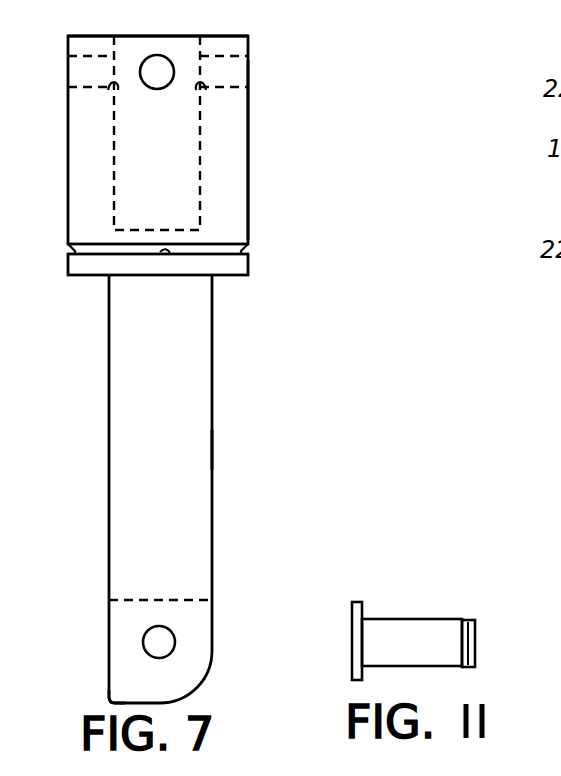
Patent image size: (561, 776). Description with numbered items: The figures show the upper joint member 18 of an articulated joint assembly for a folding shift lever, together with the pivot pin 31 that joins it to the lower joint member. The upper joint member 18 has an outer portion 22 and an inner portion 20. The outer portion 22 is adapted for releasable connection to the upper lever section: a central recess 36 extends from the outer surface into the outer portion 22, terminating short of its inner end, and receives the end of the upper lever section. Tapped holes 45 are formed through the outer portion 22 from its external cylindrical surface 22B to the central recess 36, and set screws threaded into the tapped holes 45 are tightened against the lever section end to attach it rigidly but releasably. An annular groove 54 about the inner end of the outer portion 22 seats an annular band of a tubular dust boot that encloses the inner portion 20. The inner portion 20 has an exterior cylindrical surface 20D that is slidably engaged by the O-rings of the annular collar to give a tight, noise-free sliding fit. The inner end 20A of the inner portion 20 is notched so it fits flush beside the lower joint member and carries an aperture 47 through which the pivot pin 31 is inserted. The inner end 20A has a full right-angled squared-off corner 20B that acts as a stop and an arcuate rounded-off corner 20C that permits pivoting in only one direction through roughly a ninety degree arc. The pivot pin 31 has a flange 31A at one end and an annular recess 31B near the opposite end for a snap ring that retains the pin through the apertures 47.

In FIG. 7, the upper joint member 18 is at (290, 84).
In FIG. 7, the outer portion 22 is at (252, 202).
In FIG. 7, the external cylindrical surface 22B is at (249, 167).
In FIG. 7, the central recess 36 is at (198, 142).
In FIG. 7, the tapped hole 45 is at (195, 89).
In FIG. 7, the annular groove 54 is at (165, 253).
In FIG. 7, the inner portion 20 is at (213, 420).
In FIG. 7, the inner end 20A is at (204, 620).
In FIG. 7, the squared-off corner 20B is at (107, 698).
In FIG. 7, the rounded-off corner 20C is at (205, 678).
In FIG. 7, the exterior cylindrical surface 20D is at (213, 440).
In FIG. 7, the aperture 47 is at (157, 627).
In FIG. 11, the pivot pin 31 is at (415, 608).
In FIG. 11, the flange 31A is at (356, 600).
In FIG. 11, the annular recess 31B is at (468, 618).